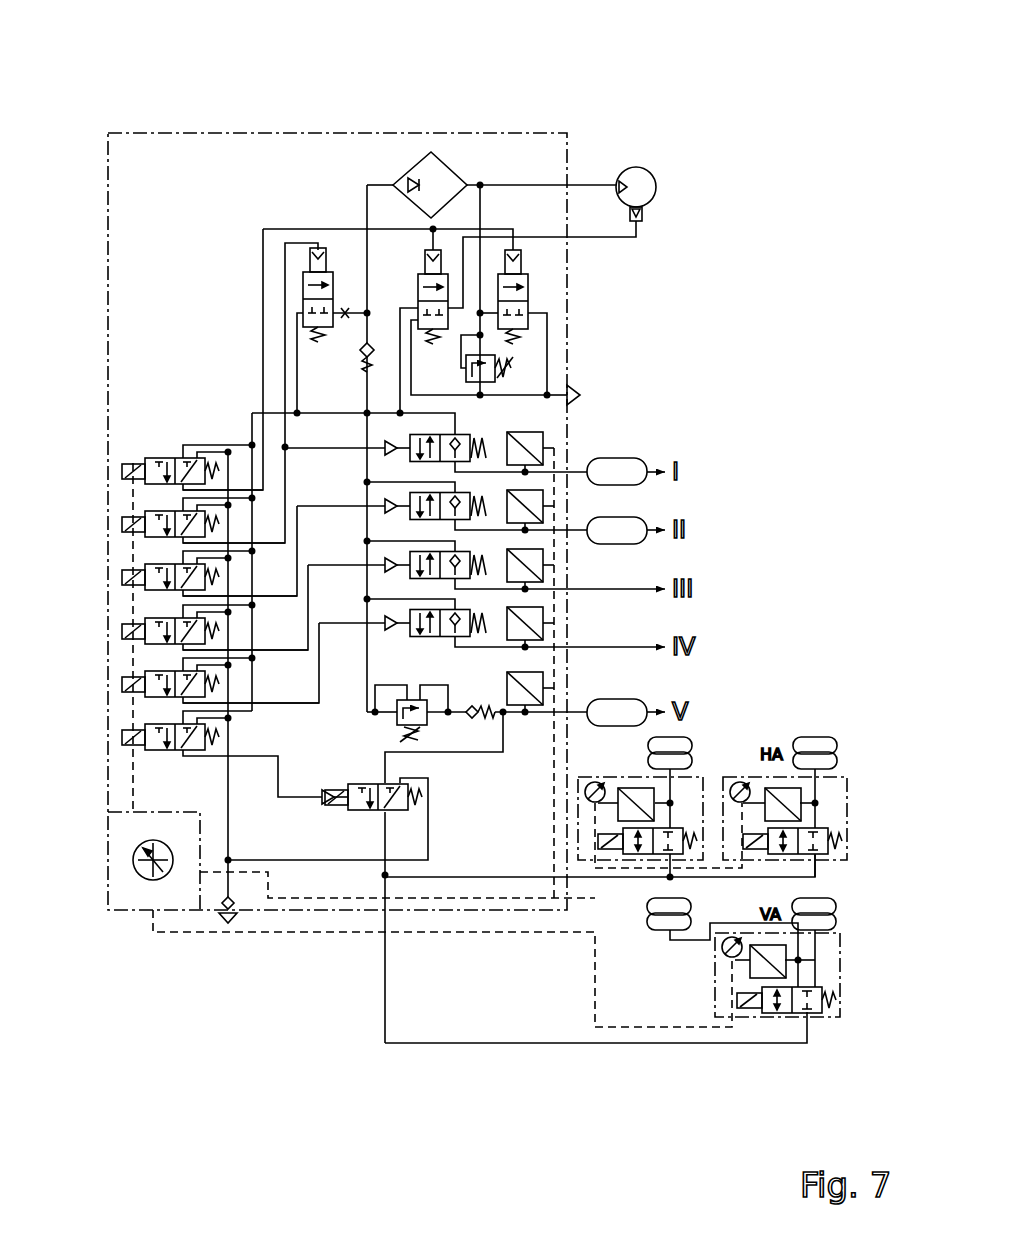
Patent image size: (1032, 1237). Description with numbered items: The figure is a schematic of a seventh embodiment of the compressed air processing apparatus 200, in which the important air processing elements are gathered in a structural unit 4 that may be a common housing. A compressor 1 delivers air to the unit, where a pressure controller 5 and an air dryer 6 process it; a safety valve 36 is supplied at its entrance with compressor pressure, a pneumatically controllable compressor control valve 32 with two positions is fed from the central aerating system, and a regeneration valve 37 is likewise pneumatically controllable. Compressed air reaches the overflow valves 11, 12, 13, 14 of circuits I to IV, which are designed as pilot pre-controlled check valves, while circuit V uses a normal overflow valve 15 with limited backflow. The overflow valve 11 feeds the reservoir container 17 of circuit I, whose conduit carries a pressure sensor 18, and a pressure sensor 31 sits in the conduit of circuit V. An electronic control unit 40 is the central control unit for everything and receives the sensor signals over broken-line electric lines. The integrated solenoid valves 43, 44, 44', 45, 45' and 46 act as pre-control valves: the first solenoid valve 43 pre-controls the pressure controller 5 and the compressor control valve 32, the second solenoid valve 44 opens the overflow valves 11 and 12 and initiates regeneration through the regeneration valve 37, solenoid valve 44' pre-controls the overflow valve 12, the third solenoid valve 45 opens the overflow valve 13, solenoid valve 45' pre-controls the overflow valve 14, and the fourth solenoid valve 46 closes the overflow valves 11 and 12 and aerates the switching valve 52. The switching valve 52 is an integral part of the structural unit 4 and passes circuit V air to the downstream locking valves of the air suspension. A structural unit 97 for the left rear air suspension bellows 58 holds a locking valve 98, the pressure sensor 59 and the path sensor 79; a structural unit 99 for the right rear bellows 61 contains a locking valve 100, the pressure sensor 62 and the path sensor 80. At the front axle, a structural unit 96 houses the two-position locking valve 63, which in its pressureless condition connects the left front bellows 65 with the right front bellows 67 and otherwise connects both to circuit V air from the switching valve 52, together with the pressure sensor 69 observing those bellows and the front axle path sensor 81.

The compressed air processing apparatus 200 is at (118, 108).
The compressor 1 is at (638, 167).
The structural unit 4 is at (523, 133).
The pressure controller 5 is at (540, 292).
The air dryer 6 is at (448, 152).
The overflow valve 11 is at (506, 404).
The overflow valve 12 is at (455, 493).
The overflow valve 13 is at (455, 592).
The overflow valve 14 is at (455, 649).
The overflow valve 15 is at (573, 681).
The reservoir container 17 is at (627, 472).
The pressure sensor 18 is at (532, 443).
The pressure sensor 31 is at (533, 678).
The compressor control valve 32 is at (405, 283).
The safety valve 36 is at (520, 371).
The regeneration valve 37 is at (313, 212).
The electronic control unit 40 is at (123, 883).
The first solenoid valve 43 is at (118, 470).
The second solenoid valve 44 is at (161, 520).
The solenoid valve 44' is at (167, 573).
The third solenoid valve 45 is at (173, 627).
The solenoid valve 45' is at (178, 680).
The fourth solenoid valve 46 is at (118, 736).
The switching valve 52 is at (354, 822).
The air suspension bellows 58 is at (673, 745).
The pressure sensor 59 is at (641, 800).
The air suspension bellows 61 is at (822, 745).
The pressure sensor 62 is at (797, 800).
The locking valve 63 is at (780, 1020).
The air suspension bellows 65 is at (674, 910).
The air suspension bellows 67 is at (822, 910).
The pressure sensor 69 is at (790, 958).
The path sensor 79 is at (597, 782).
The path sensor 80 is at (742, 782).
The path sensor 81 is at (701, 1034).
The structural unit 96 is at (845, 998).
The structural unit 97 is at (697, 775).
The locking valve 98 is at (546, 831).
The structural unit 99 is at (850, 822).
The locking valve 100 is at (852, 846).